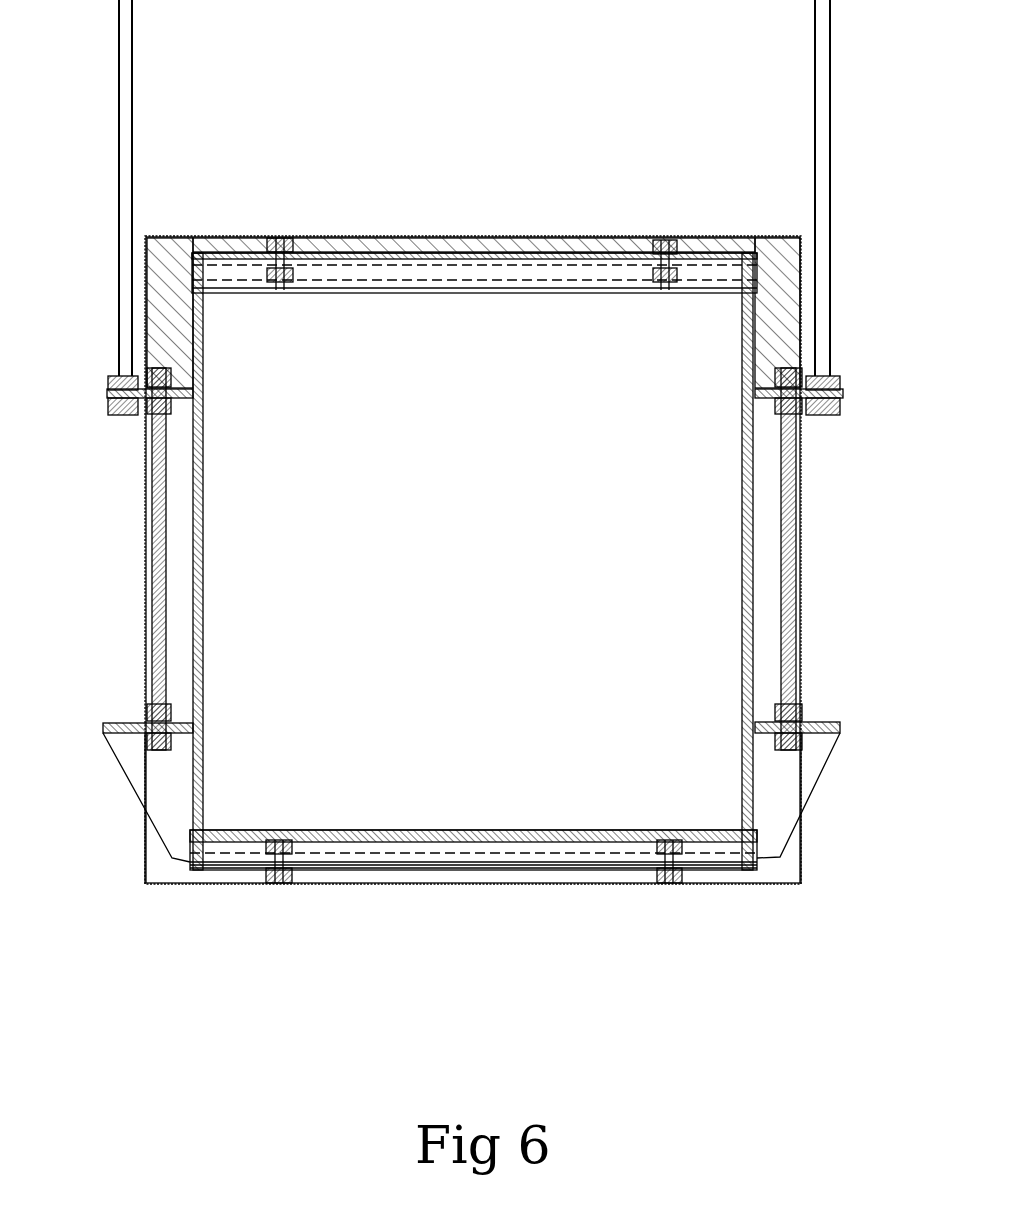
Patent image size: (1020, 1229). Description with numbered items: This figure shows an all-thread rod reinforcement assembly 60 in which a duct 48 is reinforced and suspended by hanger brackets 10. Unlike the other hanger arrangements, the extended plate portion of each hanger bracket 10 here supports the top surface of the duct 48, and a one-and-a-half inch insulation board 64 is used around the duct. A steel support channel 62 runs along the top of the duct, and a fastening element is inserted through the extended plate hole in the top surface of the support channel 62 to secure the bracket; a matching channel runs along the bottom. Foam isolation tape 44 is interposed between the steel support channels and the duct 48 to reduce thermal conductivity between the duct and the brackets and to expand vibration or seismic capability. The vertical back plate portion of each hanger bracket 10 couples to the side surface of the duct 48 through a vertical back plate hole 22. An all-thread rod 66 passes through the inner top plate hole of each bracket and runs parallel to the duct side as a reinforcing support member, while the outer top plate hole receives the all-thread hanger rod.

The all-thread rod reinforcement assembly 60 is at (473, 448).
The insulation board 64 is at (325, 236).
The duct 48 is at (750, 513).
The support channel 62 is at (530, 291).
The foam isolation tape 44 is at (586, 868).
The all-thread rod 66 is at (783, 556).
The vertical back plate hole 22 is at (760, 783).
The hanger bracket 10 is at (145, 303).